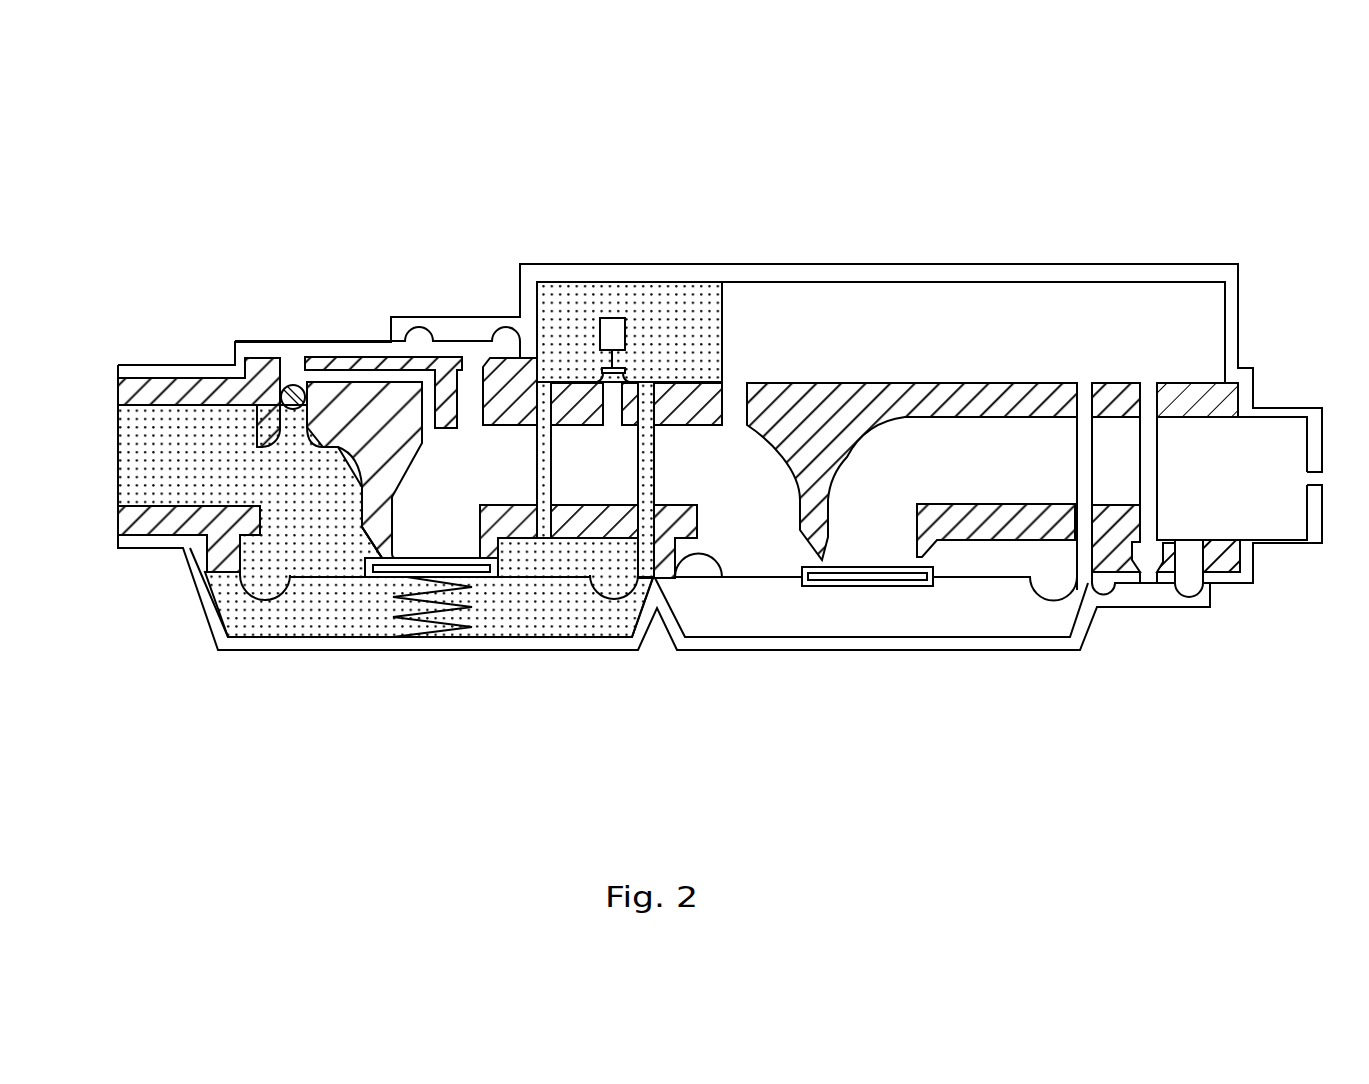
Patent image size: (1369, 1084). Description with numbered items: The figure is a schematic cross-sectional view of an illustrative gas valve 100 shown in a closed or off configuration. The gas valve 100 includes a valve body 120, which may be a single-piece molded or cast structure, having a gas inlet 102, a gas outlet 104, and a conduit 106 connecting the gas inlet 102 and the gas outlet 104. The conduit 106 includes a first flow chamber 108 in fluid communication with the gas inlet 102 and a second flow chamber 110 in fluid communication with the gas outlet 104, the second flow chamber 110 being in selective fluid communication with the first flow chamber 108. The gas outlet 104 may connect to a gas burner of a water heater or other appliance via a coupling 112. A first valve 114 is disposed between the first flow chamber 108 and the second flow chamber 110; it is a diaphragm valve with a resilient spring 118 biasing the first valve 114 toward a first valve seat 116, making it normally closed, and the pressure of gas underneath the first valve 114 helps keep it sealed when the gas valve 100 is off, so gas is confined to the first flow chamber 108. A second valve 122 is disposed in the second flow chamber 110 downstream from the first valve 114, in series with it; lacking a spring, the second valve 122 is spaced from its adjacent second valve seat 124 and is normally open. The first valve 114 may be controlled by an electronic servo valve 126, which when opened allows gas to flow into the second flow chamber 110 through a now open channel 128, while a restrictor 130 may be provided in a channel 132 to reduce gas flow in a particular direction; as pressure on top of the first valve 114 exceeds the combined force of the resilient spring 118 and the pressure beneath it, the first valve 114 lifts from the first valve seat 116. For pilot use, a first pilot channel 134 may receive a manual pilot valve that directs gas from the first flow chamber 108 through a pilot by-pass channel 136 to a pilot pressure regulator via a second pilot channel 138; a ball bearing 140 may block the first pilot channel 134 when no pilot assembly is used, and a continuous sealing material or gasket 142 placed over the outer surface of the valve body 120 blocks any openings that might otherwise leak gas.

The gas valve 100 is at (1196, 168).
The gas inlet 102 is at (125, 484).
The gas outlet 104 is at (1270, 430).
The conduit 106 is at (607, 497).
The first flow chamber 108 is at (303, 500).
The second flow chamber 110 is at (735, 487).
The coupling 112 is at (1287, 543).
The first valve 114 is at (383, 572).
The first valve seat 116 is at (395, 558).
The resilient spring 118 is at (433, 623).
The valve body 120 is at (180, 392).
The second valve 122 is at (930, 587).
The second valve seat 124 is at (832, 565).
The electronic servo valve 126 is at (613, 316).
The channel 128 is at (613, 418).
The restrictor 130 is at (538, 403).
The channel 132 is at (533, 485).
The first pilot channel 134 is at (290, 424).
The pilot by-pass channel 136 is at (372, 366).
The second pilot channel 138 is at (467, 410).
The ball bearing 140 is at (292, 384).
The sealing material or gasket 142 is at (140, 390).